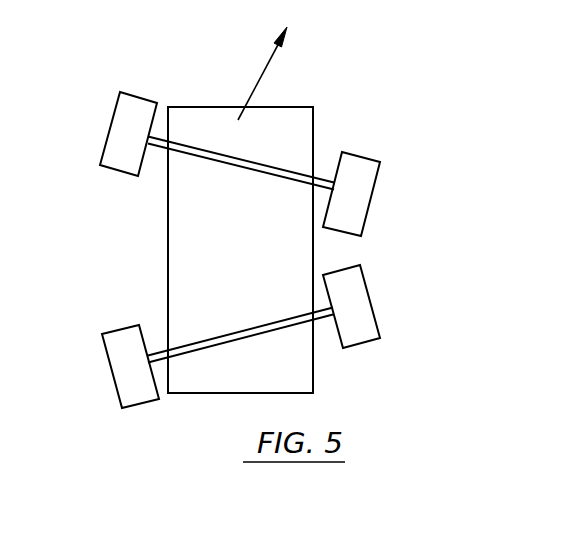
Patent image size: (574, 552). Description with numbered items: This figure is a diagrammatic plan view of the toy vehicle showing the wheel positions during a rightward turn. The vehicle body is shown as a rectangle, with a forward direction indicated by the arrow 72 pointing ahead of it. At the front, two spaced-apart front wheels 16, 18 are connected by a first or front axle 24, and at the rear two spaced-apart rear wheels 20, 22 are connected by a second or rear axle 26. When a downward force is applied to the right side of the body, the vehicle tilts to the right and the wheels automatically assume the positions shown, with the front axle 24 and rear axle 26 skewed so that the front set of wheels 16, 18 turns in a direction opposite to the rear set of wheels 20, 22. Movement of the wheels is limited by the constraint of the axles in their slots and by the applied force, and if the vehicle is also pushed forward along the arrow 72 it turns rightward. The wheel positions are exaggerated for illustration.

The front wheel 16 is at (123, 115).
The front wheel 18 is at (355, 216).
The rear wheel 20 is at (363, 322).
The rear wheel 22 is at (112, 352).
The front axle 24 is at (245, 166).
The rear axle 26 is at (250, 332).
The arrow indicating forward direction 72 is at (260, 98).